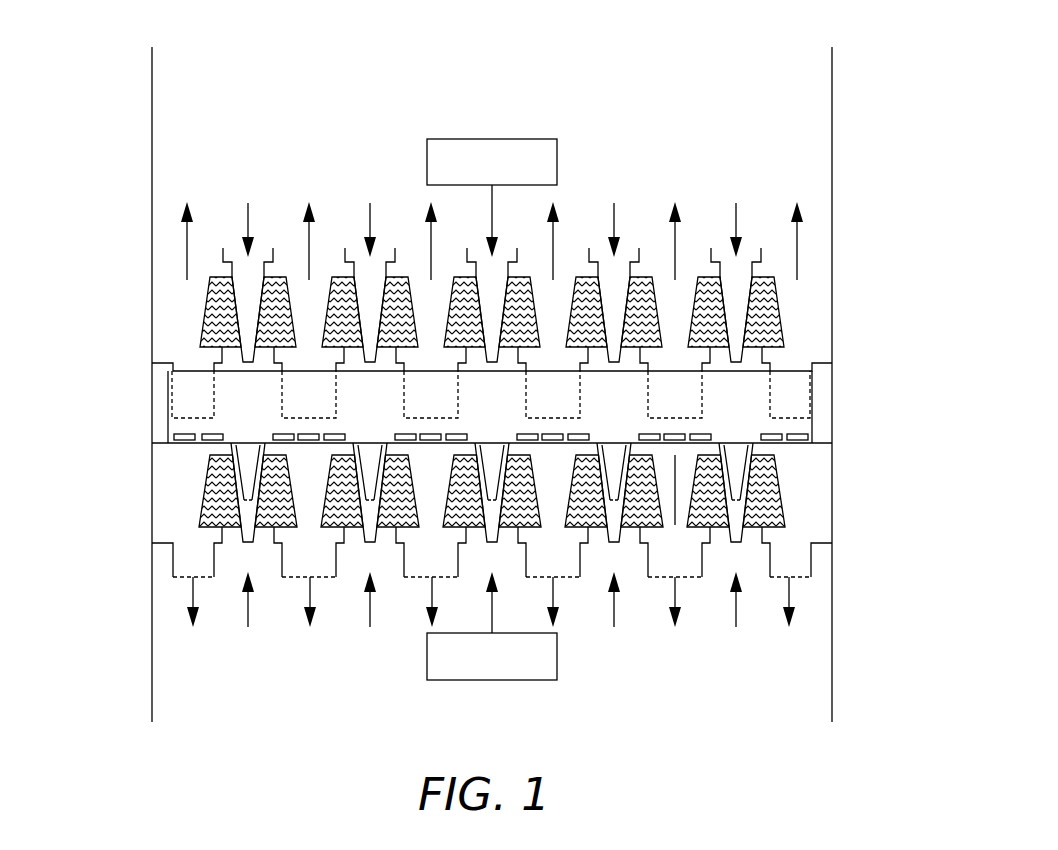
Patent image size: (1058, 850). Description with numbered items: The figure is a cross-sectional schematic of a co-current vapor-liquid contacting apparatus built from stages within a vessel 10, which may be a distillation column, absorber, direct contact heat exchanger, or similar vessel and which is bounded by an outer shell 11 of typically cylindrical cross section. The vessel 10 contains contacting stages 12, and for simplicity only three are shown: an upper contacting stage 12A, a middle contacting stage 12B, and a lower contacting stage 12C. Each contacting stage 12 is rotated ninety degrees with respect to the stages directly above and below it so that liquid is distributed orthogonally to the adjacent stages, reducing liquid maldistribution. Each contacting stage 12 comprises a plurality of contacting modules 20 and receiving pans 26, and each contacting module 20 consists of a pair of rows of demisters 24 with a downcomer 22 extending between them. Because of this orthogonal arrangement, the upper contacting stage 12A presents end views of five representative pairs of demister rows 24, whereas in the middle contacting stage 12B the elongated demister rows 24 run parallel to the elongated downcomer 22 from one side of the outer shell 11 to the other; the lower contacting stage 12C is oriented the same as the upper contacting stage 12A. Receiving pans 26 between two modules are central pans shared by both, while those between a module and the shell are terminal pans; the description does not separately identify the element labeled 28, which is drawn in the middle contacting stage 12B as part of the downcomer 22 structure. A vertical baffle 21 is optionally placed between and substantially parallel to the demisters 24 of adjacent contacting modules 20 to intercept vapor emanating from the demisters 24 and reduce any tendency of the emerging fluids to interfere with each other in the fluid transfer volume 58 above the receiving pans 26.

The vessel 10 is at (866, 68).
The outer shell 11 is at (152, 125).
The contacting stage 12 is at (852, 390).
The upper contacting stage 12A is at (106, 333).
The middle contacting stage 12B is at (106, 420).
The lower contacting stage 12C is at (106, 507).
The contacting module 20 is at (818, 508).
The vertical baffle 21 is at (674, 521).
The downcomer 22 is at (813, 437).
The demisters 24 is at (530, 282).
The receiving pan 26 is at (813, 364).
The downcomer box 28 is at (525, 373).
The fluid transfer volume 58 is at (673, 302).